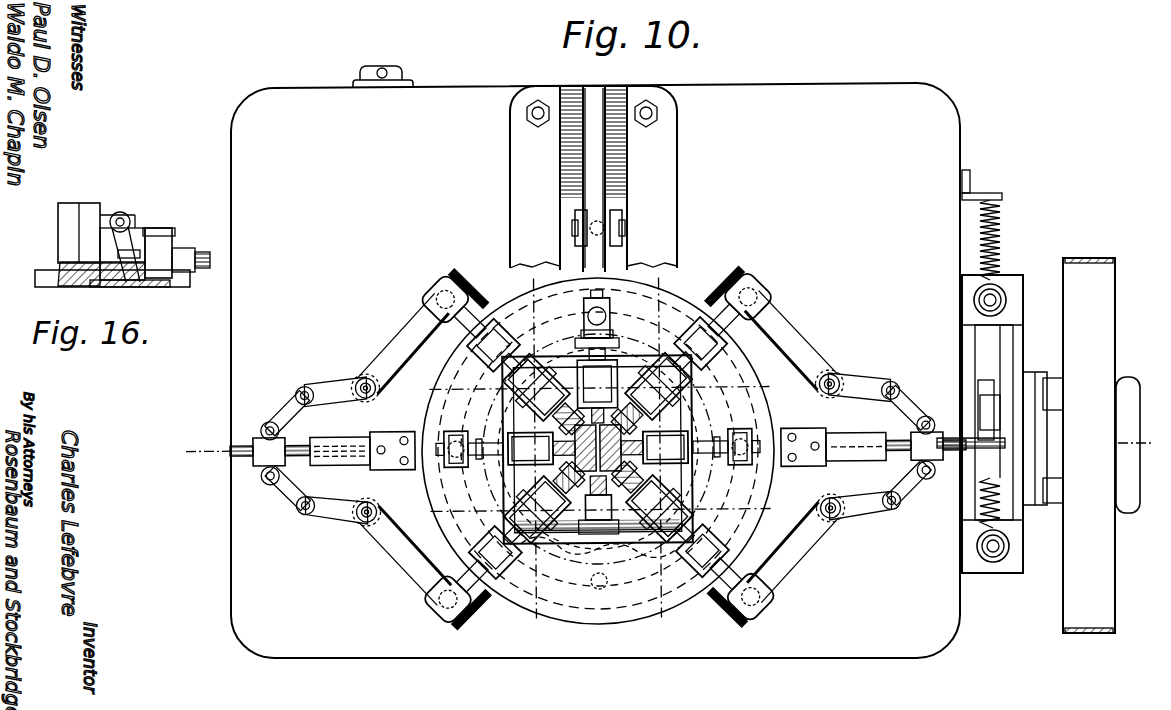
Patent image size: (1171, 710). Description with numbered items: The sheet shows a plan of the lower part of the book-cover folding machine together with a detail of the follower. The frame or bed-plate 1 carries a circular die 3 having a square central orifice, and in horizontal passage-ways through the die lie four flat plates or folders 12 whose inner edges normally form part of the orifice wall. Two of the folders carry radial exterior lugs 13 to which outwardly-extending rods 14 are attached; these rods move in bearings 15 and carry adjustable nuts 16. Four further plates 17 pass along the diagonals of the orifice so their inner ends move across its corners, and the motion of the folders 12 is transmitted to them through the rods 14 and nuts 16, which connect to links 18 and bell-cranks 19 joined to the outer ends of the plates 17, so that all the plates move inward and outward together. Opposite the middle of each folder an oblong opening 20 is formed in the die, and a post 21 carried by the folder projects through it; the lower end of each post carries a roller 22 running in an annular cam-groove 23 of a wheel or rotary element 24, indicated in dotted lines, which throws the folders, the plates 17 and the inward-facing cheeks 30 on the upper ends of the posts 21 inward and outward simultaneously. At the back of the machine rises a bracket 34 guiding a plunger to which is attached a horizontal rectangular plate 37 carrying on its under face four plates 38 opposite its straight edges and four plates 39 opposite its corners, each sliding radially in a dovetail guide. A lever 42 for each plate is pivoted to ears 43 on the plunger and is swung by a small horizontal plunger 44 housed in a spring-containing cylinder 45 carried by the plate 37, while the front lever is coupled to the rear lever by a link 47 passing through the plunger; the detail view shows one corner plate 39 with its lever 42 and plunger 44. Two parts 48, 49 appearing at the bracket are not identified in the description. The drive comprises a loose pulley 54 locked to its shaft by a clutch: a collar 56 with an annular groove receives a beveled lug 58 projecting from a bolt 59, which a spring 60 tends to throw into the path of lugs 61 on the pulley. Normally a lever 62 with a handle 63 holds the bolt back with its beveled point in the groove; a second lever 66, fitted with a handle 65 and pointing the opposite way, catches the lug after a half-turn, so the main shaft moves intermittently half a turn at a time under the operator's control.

In FIG. 10, the frame or bed-plate 1 is at (595, 362).
In FIG. 10, the circular die 3 is at (440, 376).
In FIG. 10, the flat plate or folder 12 is at (668, 302).
In FIG. 10, the radial exterior lug 13 is at (418, 472).
In FIG. 10, the rod 14 is at (242, 444).
In FIG. 10, the bearing 15 is at (322, 466).
In FIG. 10, the adjustable nut 16 is at (262, 458).
In FIG. 10, the diagonal plate 17 is at (488, 620).
In FIG. 10, the link 18 is at (282, 494).
In FIG. 10, the bell-crank 19 is at (334, 384).
In FIG. 10, the oblong opening 20 is at (560, 316).
In FIG. 10, the post 21 is at (556, 318).
In FIG. 10, the roller 22 is at (432, 416).
In FIG. 10, the annular cam-groove 23 is at (586, 594).
In FIG. 10, the wheel or rotary element 24 is at (556, 596).
In FIG. 10, the cheek 30 is at (620, 346).
In FIG. 10, the bracket 34 is at (630, 258).
In FIG. 10, the horizontal rectangular plate 37 is at (618, 512).
In FIG. 16, the horizontal rectangular plate 37 is at (64, 278).
In FIG. 10, the plate 38 is at (562, 372).
In FIG. 16, the corner plate 39 is at (158, 288).
In FIG. 16, the lever 42 is at (134, 232).
In FIG. 10, the ear 43 is at (599, 440).
In FIG. 10, the small horizontal plunger 44 is at (500, 436).
In FIG. 16, the small horizontal plunger 44 is at (202, 252).
In FIG. 10, the small cylinder 45 is at (598, 448).
In FIG. 10, the link 47 is at (592, 511).
In FIG. 10, the bracket 48 is at (592, 188).
In FIG. 10, the pinion 49 is at (574, 232).
In FIG. 10, the loose pulley 54 is at (1114, 445).
In FIG. 10, the collar 56 is at (1032, 504).
In FIG. 10, the beveled lug 58 is at (1000, 392).
In FIG. 10, the bolt 59 is at (1052, 430).
In FIG. 10, the spring 60 is at (962, 436).
In FIG. 10, the lug 61 is at (1046, 540).
In FIG. 10, the lever 62 is at (1052, 404).
In FIG. 10, the handle 63 is at (996, 566).
In FIG. 10, the handle 65 is at (1000, 284).
In FIG. 10, the second lever 66 is at (1010, 342).